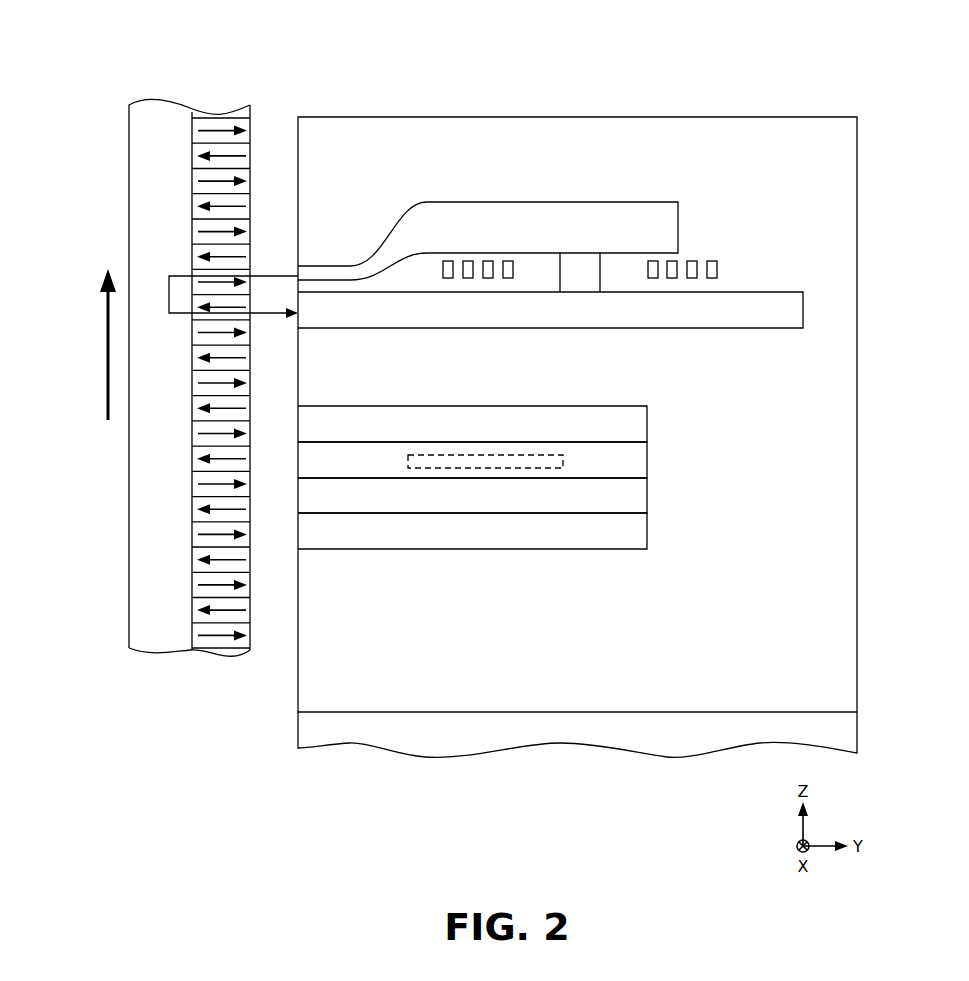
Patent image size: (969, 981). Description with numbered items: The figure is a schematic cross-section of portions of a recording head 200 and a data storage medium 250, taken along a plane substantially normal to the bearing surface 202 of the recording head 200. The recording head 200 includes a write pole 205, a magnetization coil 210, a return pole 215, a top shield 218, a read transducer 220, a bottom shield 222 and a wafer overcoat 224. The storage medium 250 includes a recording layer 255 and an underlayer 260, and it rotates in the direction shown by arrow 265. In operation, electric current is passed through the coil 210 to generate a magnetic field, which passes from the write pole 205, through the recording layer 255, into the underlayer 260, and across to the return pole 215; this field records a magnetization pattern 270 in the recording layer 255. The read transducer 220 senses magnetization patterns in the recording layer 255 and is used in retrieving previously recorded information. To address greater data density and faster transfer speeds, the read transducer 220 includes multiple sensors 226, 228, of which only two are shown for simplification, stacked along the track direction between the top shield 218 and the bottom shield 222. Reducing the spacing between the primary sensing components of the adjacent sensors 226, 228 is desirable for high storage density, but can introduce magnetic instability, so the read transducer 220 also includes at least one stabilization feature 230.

The recording head 200 is at (704, 80).
The bearing surface 202 is at (298, 688).
The write pole 205 is at (342, 265).
The magnetization coil 210 is at (487, 261).
The return pole 215 is at (490, 330).
The top shield 218 is at (560, 407).
The read transducer 220 is at (512, 490).
The bottom shield 222 is at (553, 530).
The wafer overcoat 224 is at (773, 371).
The sensor 226 is at (605, 458).
The sensor 228 is at (611, 497).
The stabilization feature 230 is at (418, 468).
The data storage medium 250 is at (204, 399).
The recording layer 255 is at (213, 116).
The underlayer 260 is at (147, 628).
The arrow 265 is at (106, 346).
The magnetization pattern 270 is at (232, 116).